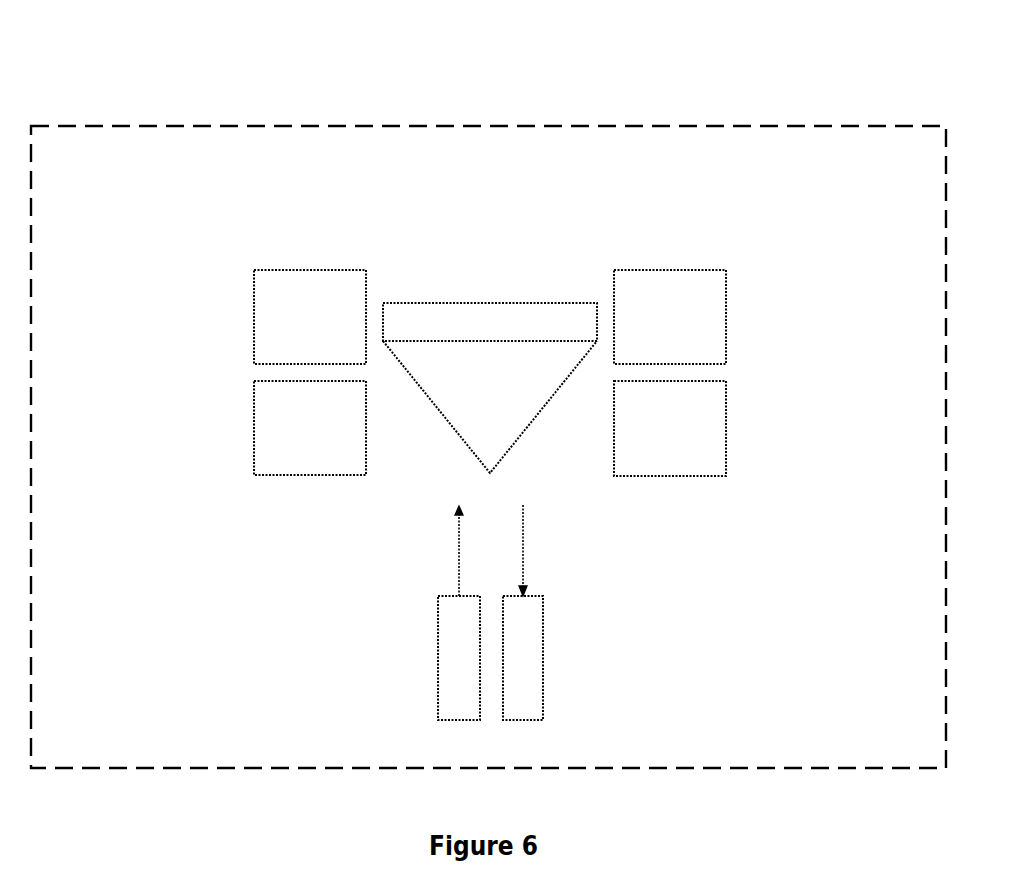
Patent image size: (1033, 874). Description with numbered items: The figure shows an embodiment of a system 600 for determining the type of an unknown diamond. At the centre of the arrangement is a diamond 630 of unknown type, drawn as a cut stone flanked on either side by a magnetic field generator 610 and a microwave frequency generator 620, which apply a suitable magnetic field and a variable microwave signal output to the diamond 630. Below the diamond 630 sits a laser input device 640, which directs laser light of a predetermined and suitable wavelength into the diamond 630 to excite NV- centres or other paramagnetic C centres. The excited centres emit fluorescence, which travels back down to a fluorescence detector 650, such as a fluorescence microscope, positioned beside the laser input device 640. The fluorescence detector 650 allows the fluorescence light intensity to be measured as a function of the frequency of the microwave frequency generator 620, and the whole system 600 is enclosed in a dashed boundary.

The system 600 is at (737, 115).
The magnetic field generator 610 is at (817, 270).
The microwave frequency generator 620 is at (807, 397).
The diamond 630 is at (426, 303).
The laser input device 640 is at (438, 658).
The fluorescence detector 650 is at (543, 657).